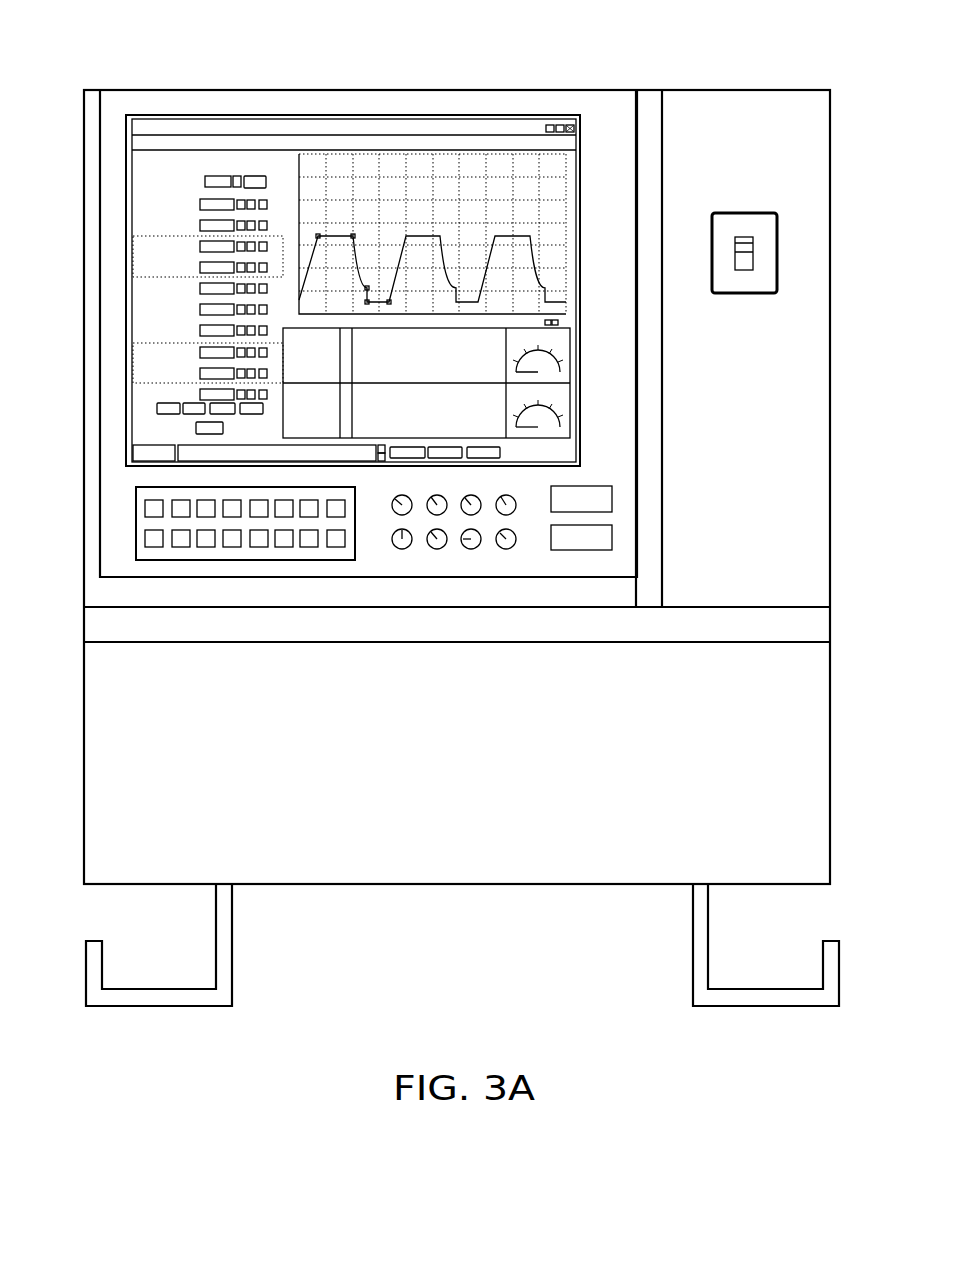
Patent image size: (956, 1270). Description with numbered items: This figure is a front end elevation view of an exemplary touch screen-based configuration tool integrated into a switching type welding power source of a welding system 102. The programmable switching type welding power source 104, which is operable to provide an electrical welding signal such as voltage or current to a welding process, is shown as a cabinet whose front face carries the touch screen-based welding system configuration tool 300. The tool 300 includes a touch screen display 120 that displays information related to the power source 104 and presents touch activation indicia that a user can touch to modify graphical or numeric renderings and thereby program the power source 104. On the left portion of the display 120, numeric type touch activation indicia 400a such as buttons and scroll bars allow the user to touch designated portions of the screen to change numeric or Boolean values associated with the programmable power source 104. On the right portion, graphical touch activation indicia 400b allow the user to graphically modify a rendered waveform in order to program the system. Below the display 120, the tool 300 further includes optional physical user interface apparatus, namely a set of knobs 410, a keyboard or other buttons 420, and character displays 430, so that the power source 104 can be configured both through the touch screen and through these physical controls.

The welding system 102 is at (178, 34).
The programmable switching type welding power source 104 is at (680, 92).
The touch screen display 120 is at (150, 112).
The touch screen-based welding system configuration tool 300 is at (696, 179).
The numeric type touch activation indicia 400a is at (194, 379).
The graphical touch activation indicia 400b is at (368, 240).
The knobs 410 is at (510, 552).
The keyboard or other buttons 420 is at (282, 560).
The character displays 430 is at (619, 491).